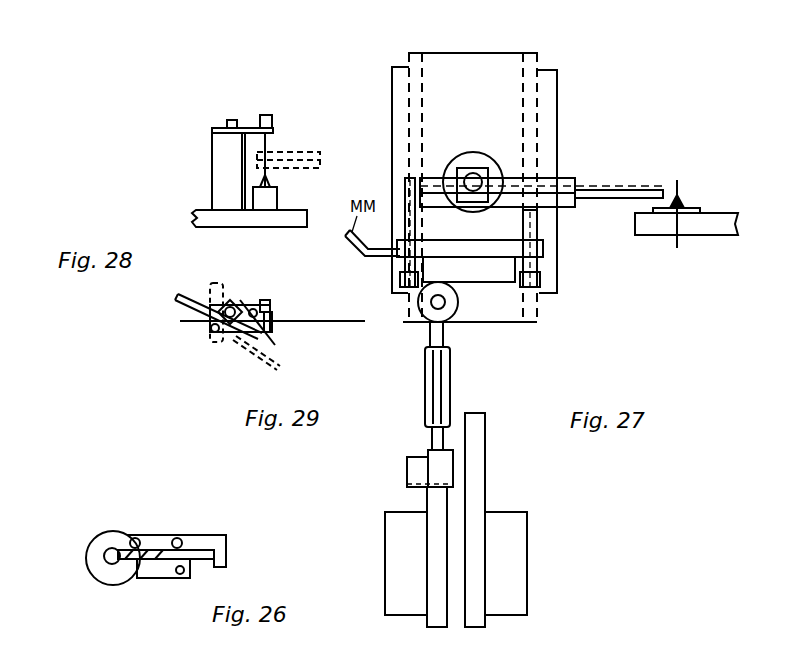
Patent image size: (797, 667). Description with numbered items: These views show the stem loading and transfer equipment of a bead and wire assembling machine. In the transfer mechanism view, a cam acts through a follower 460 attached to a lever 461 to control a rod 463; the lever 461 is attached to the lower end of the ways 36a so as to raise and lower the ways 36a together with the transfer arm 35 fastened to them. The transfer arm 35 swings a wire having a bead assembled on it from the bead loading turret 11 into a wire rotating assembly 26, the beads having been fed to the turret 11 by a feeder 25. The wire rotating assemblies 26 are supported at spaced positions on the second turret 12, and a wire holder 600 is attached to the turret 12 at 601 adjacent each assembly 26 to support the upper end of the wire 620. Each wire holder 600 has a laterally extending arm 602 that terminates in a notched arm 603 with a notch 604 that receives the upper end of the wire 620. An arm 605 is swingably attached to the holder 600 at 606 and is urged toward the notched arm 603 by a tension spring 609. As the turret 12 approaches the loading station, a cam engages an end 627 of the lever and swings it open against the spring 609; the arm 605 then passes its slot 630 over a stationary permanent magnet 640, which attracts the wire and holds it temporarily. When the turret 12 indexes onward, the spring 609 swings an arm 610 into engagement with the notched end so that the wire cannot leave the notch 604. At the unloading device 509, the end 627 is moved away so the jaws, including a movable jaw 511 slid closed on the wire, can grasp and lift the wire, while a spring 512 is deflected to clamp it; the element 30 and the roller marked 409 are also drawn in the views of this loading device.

In FIG. 27, the ways 36a is at (483, 60).
In FIG. 27, the transfer arm 35 is at (610, 195).
In FIG. 28, the transfer arm 35 is at (290, 158).
In FIG. 27, the feeder 25 is at (680, 205).
In FIG. 27, the bead loading turret 11 is at (650, 225).
In FIG. 27, the rod 463 is at (452, 365).
In FIG. 27, the lever 461 is at (460, 458).
In FIG. 27, the follower 460 is at (407, 484).
In FIG. 28, the wire holder 600 is at (210, 160).
In FIG. 28, the attachment point 601 is at (212, 208).
In FIG. 28, the arm 605 is at (245, 128).
In FIG. 28, the pivot 606 is at (233, 118).
In FIG. 28, the slot 630 is at (270, 118).
In FIG. 28, the wire 620 is at (268, 146).
In FIG. 29, the wire 620 is at (255, 337).
In FIG. 28, the wire rotating assembly 26 is at (277, 202).
In FIG. 28, the turret 12 is at (285, 230).
In FIG. 29, the laterally extending arm 602 is at (240, 302).
In FIG. 29, the tension spring 609 is at (248, 310).
In FIG. 29, the notched arm 603 is at (272, 305).
In FIG. 29, the permanent magnet 640 is at (275, 316).
In FIG. 29, the notch 604 is at (272, 325).
In FIG. 29, the arm 610 is at (268, 332).
In FIG. 29, the end of lever 627 is at (195, 322).
In FIG. 29, the sheet 30 is at (198, 324).
In FIG. 26, the roller 409 is at (110, 566).
In FIG. 26, the unloading device 509 is at (175, 535).
In FIG. 26, the spring 512 is at (153, 548).
In FIG. 26, the movable jaw 511 is at (178, 562).